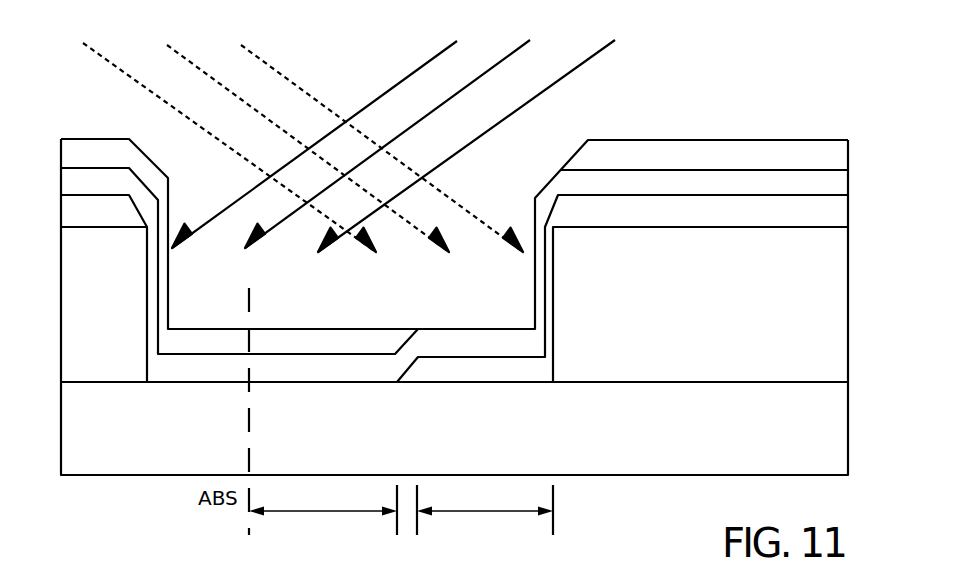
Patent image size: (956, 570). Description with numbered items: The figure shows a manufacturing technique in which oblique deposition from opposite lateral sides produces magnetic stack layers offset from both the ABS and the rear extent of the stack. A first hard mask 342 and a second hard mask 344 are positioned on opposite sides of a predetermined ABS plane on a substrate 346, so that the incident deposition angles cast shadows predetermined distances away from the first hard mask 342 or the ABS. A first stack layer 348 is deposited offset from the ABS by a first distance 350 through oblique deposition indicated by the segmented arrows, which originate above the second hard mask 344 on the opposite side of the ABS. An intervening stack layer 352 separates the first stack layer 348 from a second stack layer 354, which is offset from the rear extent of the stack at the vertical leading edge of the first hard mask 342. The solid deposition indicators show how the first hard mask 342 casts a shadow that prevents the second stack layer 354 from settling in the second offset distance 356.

The first hard mask 342 is at (700, 304).
The second hard mask 344 is at (104, 304).
The substrate 346 is at (454, 412).
The first stack layer 348 is at (454, 288).
The first distance 350 is at (323, 510).
The intervening stack layer 352 is at (454, 273).
The second stack layer 354 is at (454, 245).
The second offset distance 356 is at (485, 510).